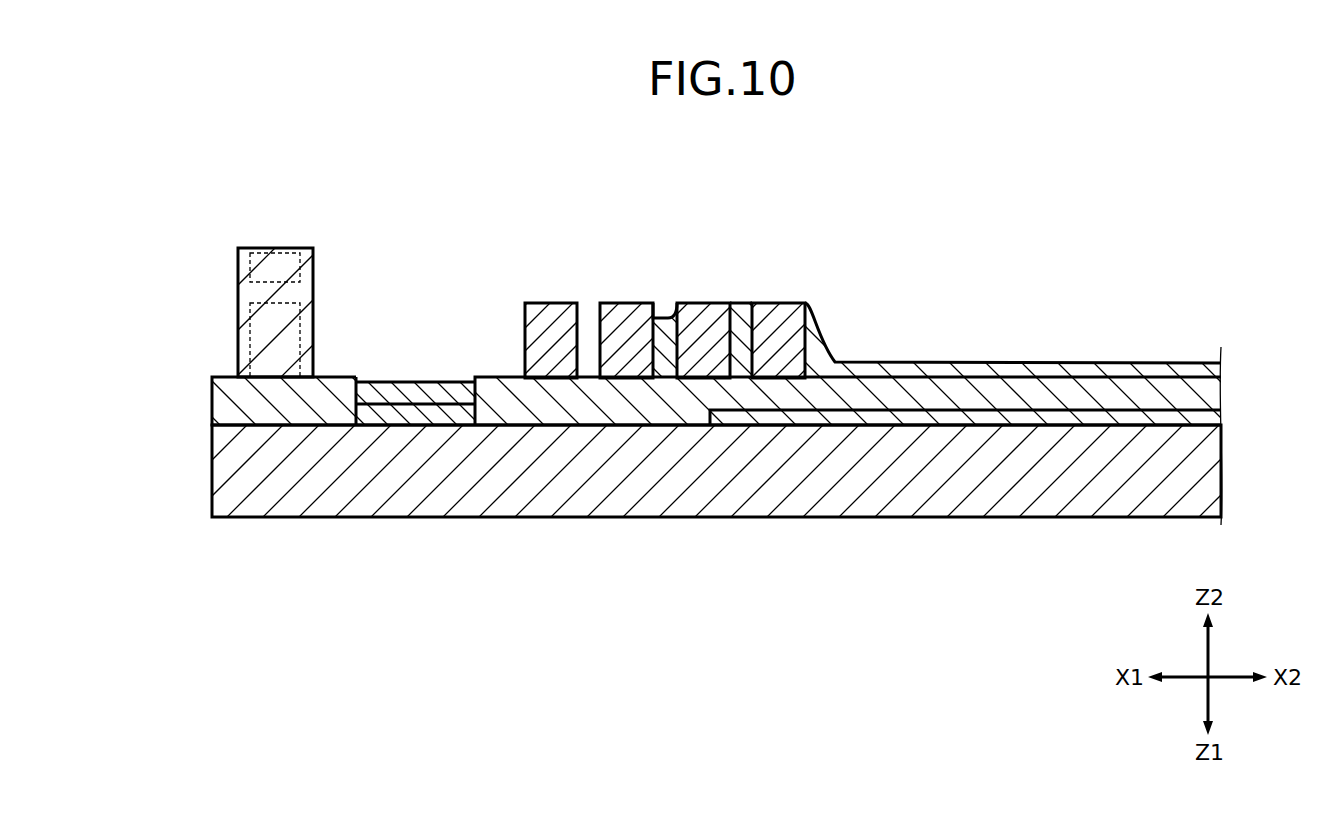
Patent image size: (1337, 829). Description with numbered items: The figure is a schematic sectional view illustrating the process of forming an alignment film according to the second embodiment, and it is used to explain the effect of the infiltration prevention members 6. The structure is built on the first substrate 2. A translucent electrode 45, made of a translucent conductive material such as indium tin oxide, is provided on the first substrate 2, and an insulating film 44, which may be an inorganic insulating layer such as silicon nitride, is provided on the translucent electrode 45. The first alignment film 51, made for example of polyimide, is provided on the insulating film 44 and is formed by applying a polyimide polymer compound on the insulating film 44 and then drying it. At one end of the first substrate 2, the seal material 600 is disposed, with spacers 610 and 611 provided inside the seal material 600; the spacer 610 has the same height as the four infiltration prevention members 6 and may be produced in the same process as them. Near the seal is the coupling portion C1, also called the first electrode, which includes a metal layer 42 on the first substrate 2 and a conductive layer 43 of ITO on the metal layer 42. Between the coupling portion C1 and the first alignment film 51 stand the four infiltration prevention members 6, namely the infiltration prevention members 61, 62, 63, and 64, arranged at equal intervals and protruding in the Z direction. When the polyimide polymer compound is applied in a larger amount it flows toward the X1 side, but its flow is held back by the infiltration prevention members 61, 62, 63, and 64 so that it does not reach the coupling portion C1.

The first substrate 2 is at (1207, 472).
The insulating film 44 is at (238, 404).
The translucent electrode 45 is at (1212, 417).
The first alignment film 51 is at (1213, 372).
The coupling portion (first electrode) C1 is at (465, 243).
The metal layer 42 is at (383, 412).
The conductive layer 43 is at (437, 395).
The seal material 600 is at (257, 297).
The spacer 611 is at (237, 263).
The spacer 610 is at (237, 354).
The infiltration prevention members 6 is at (588, 414).
The first infiltration prevention member 61 is at (552, 318).
The second infiltration prevention member 62 is at (628, 318).
The third infiltration prevention member 63 is at (702, 318).
The fourth infiltration prevention member 64 is at (773, 318).